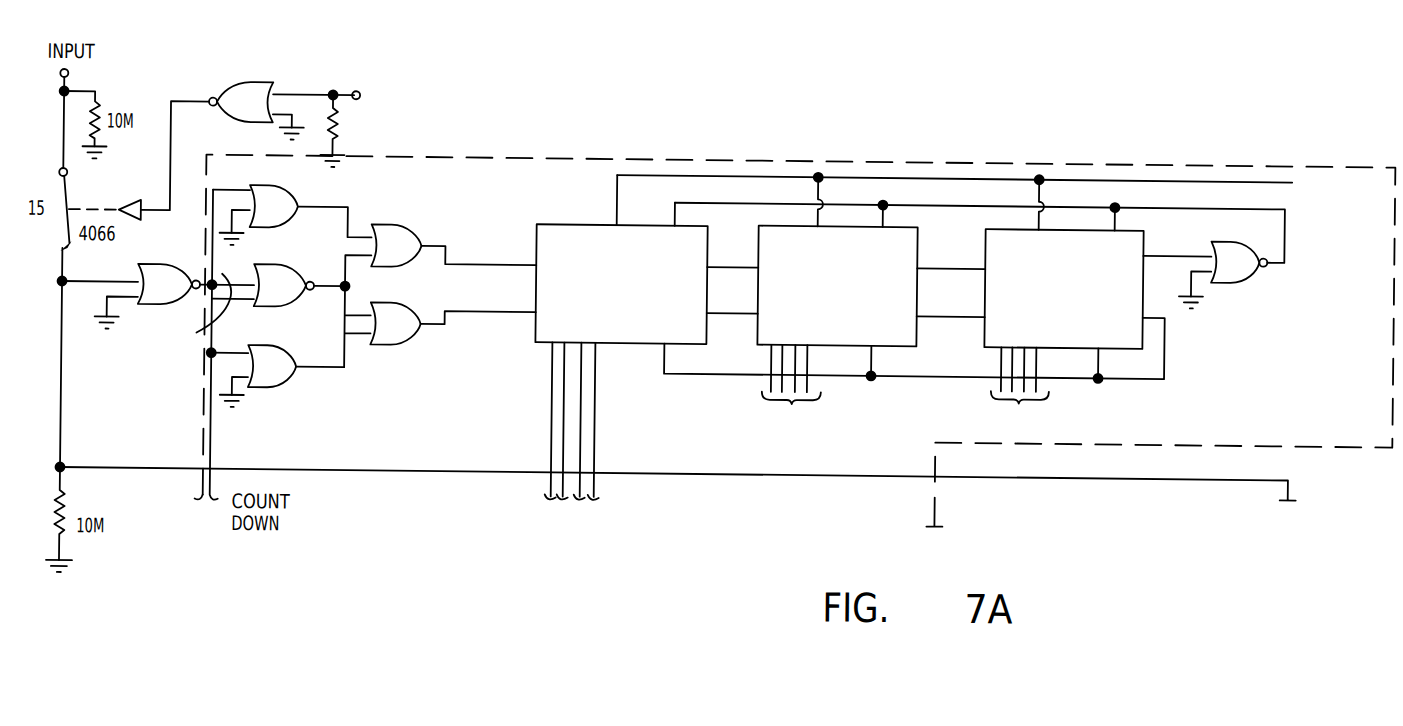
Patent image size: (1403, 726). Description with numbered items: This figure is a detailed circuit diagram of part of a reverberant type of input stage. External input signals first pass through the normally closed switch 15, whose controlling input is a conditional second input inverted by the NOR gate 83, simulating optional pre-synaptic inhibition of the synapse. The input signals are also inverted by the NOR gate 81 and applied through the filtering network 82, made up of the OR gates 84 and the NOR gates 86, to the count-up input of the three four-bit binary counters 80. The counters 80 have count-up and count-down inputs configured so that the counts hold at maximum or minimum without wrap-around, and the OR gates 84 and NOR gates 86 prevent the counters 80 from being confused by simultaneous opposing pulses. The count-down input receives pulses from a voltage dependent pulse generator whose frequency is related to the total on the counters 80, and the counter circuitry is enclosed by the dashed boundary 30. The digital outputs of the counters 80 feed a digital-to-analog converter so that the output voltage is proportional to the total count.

The switch 15 is at (78, 207).
The NOR gate 81 is at (153, 262).
The NOR gate 83 is at (221, 126).
The OR gates 84 is at (275, 183).
The NOR gates 86 is at (279, 262).
The filtering network 82 is at (418, 214).
The four bit binary counters 80 is at (706, 276).
The counter circuit 30 is at (1362, 152).